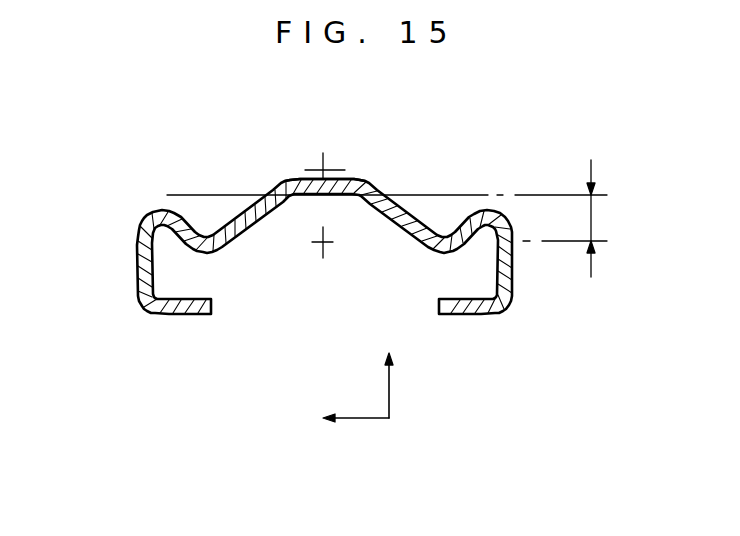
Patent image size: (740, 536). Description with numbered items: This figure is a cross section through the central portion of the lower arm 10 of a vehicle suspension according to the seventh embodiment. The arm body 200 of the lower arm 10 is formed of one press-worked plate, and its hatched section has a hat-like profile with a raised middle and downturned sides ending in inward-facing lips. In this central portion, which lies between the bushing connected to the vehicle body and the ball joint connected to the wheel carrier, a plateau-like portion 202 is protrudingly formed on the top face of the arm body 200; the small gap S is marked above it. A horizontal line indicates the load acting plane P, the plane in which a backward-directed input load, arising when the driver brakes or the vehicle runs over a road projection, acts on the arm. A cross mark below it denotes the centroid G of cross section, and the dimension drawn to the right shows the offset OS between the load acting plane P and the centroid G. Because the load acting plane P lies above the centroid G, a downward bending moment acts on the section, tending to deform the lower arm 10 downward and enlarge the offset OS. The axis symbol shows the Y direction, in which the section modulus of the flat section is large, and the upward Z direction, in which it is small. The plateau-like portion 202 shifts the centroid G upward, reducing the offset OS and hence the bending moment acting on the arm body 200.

The lower arm 10 is at (274, 269).
The arm body 200 is at (139, 262).
The plateau-like portion 202 is at (352, 178).
The load acting plane P is at (199, 195).
The gap distance S is at (330, 170).
The centroid of cross section G is at (318, 249).
The offset OS is at (596, 215).
The Z direction Z is at (391, 392).
The Y direction Y is at (365, 419).